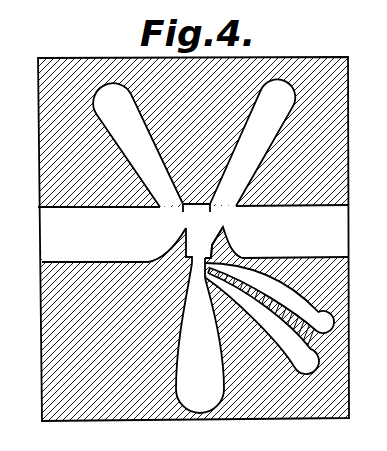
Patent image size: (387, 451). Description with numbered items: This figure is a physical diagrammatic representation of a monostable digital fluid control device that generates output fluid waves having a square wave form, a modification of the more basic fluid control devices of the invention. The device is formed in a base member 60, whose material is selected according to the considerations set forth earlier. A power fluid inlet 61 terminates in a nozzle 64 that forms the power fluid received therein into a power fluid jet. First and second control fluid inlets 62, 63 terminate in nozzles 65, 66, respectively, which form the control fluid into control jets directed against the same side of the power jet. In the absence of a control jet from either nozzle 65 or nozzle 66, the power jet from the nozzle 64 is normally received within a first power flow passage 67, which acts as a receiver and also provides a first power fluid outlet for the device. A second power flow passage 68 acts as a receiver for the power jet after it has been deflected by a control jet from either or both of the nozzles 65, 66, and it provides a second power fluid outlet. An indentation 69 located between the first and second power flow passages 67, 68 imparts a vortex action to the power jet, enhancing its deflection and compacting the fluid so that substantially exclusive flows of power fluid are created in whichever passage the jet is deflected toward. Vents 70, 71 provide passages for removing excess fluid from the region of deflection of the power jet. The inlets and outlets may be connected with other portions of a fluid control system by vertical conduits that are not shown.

The base member 60 is at (279, 58).
The power fluid inlet 61 is at (199, 400).
The first control fluid inlet 62 is at (317, 311).
The second control fluid inlet 63 is at (300, 361).
The nozzle 64 is at (204, 252).
The nozzle 65 is at (234, 260).
The nozzle 66 is at (265, 309).
The first power flow passage 67 is at (257, 112).
The second power flow passage 68 is at (130, 111).
The indentation 69 is at (198, 218).
The vent 70 is at (42, 231).
The vent 71 is at (339, 232).